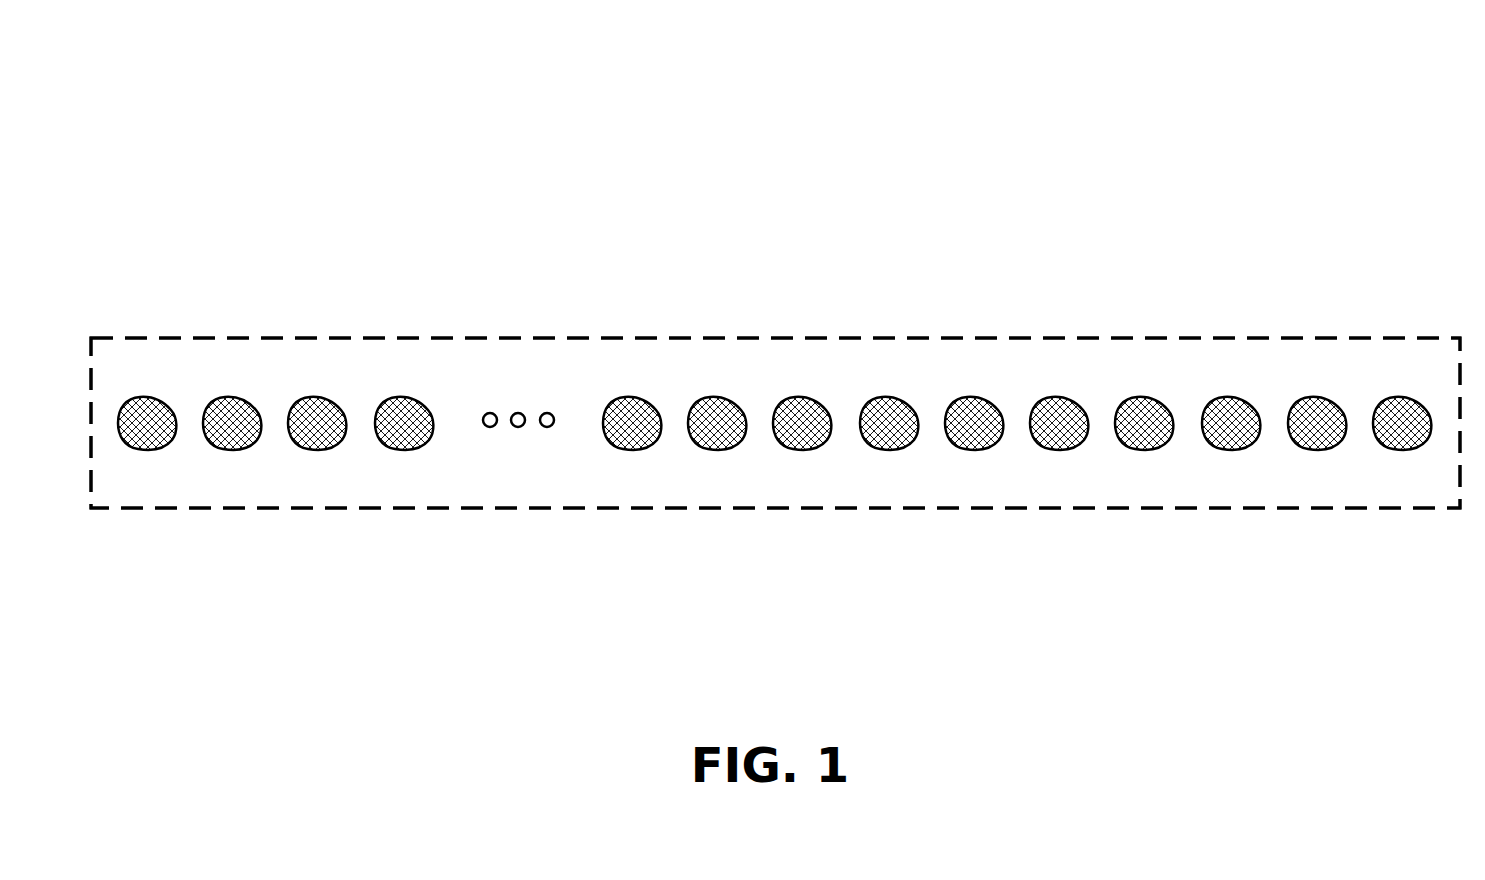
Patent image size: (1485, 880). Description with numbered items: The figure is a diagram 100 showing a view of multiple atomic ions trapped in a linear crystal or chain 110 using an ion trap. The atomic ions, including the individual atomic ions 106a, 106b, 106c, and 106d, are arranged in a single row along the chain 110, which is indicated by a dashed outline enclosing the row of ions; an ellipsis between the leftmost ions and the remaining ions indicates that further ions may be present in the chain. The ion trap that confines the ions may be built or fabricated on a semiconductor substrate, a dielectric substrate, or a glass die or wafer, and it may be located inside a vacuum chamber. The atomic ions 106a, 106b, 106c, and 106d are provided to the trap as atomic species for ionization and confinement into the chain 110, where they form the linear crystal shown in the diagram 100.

The diagram 100 is at (262, 95).
The linear crystal or chain 110 is at (837, 337).
The atomic ion 106a is at (176, 406).
The atomic ion 106b is at (258, 406).
The atomic ion 106c is at (1338, 404).
The atomic ion 106d is at (1421, 404).